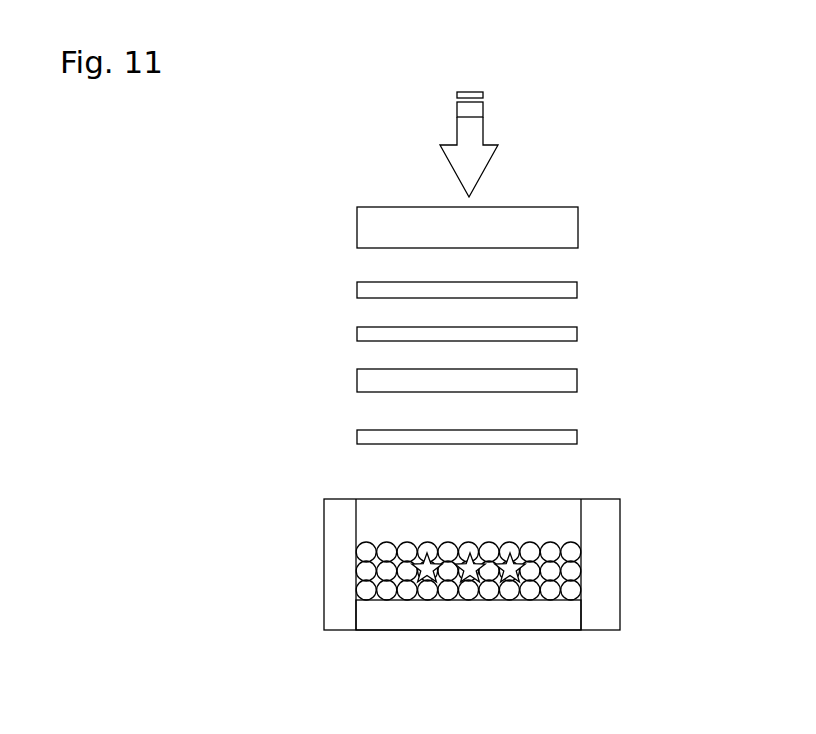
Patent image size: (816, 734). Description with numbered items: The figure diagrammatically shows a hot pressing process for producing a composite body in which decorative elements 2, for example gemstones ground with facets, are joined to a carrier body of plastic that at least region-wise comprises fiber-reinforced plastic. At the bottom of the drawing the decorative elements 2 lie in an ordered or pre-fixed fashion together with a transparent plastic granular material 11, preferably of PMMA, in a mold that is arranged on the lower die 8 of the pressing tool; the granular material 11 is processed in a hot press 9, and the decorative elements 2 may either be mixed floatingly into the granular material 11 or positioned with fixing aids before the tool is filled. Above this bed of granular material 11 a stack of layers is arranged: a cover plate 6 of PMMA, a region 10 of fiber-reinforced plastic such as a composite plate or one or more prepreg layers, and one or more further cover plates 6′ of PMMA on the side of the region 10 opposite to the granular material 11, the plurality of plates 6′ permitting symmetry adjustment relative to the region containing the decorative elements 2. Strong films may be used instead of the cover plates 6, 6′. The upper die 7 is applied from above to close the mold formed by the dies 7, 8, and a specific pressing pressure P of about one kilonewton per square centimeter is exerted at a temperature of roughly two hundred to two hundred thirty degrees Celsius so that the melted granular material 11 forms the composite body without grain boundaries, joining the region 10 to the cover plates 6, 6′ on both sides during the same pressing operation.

The pressing pressure P is at (479, 142).
The upper die 7 is at (558, 222).
The cover plate 6′ is at (375, 288).
The region of fiber-reinforced plastic 10 is at (387, 386).
The cover plate 6 is at (375, 435).
The hot press 9 is at (345, 610).
The lower die 8 is at (555, 618).
The plastic granular material 11 is at (570, 573).
The decorative elements 2 is at (502, 578).